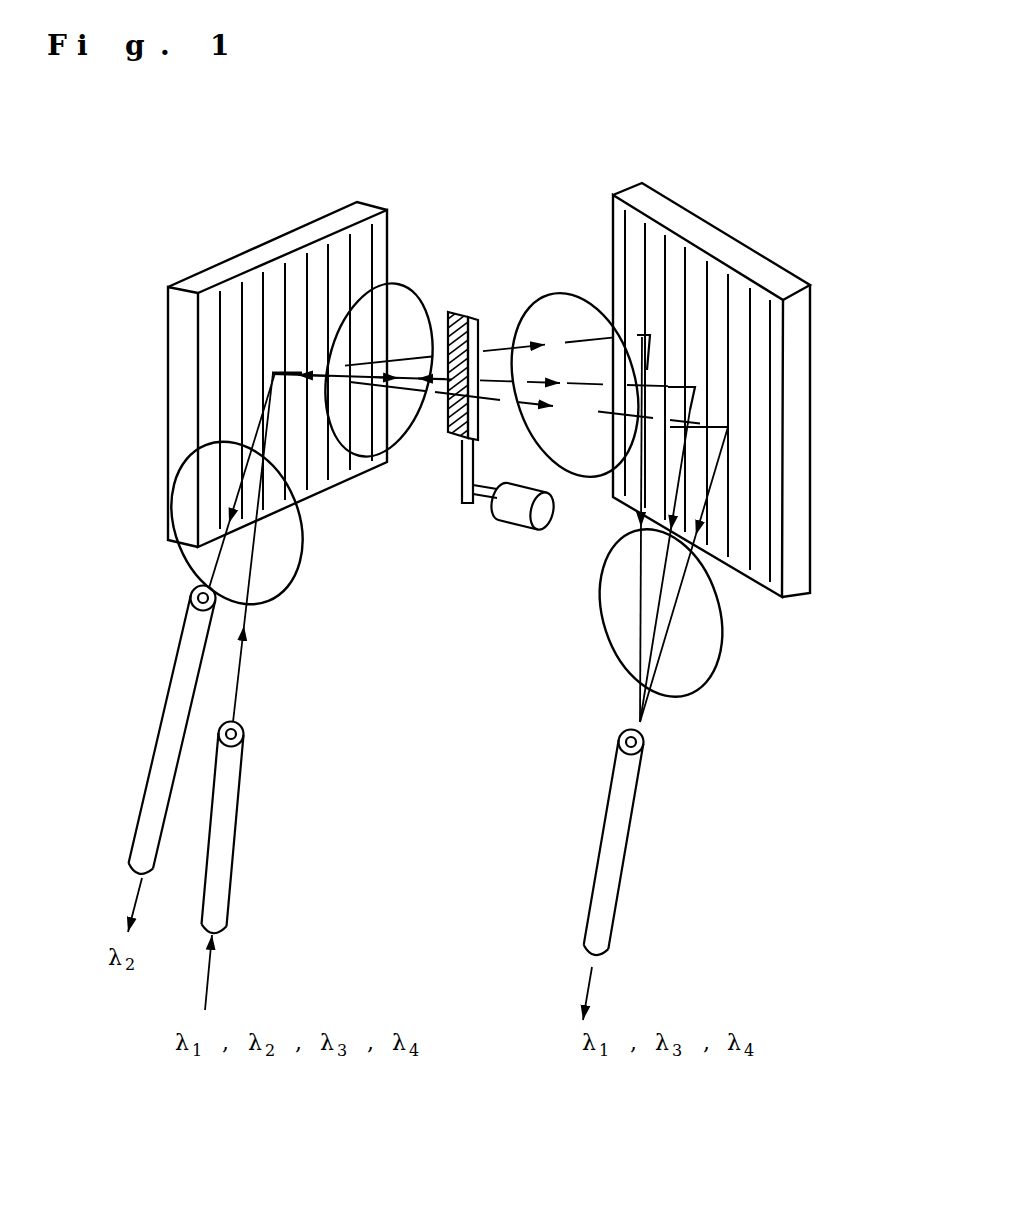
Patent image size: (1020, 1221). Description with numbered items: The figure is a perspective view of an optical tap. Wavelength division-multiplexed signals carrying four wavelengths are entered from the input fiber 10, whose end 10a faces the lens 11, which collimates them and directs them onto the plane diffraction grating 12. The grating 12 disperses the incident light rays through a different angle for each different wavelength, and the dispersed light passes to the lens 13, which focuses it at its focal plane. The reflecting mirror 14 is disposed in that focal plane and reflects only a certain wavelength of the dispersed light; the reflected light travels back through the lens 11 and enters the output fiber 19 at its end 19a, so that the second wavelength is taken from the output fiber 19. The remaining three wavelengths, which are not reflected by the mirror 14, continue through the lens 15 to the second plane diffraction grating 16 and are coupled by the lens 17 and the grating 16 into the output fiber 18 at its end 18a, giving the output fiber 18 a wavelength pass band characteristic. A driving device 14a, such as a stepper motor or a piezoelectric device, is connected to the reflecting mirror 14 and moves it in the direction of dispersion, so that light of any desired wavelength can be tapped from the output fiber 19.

The input fiber 10 is at (276, 816).
The end face of input optical fiber 10a is at (245, 733).
The lens 11 is at (303, 588).
The plane diffraction grating 12 is at (283, 235).
The lens 13 is at (405, 290).
The reflecting mirror 14 is at (455, 442).
The driving device 14a is at (518, 530).
The lens 15 is at (548, 292).
The plane diffraction grating 16 is at (748, 246).
The lens 17 is at (723, 652).
The output fiber 18 is at (667, 833).
The end face of output optical fiber 18a is at (645, 738).
The output fiber 19 is at (145, 709).
The end face of drop optical fiber 19a is at (198, 590).